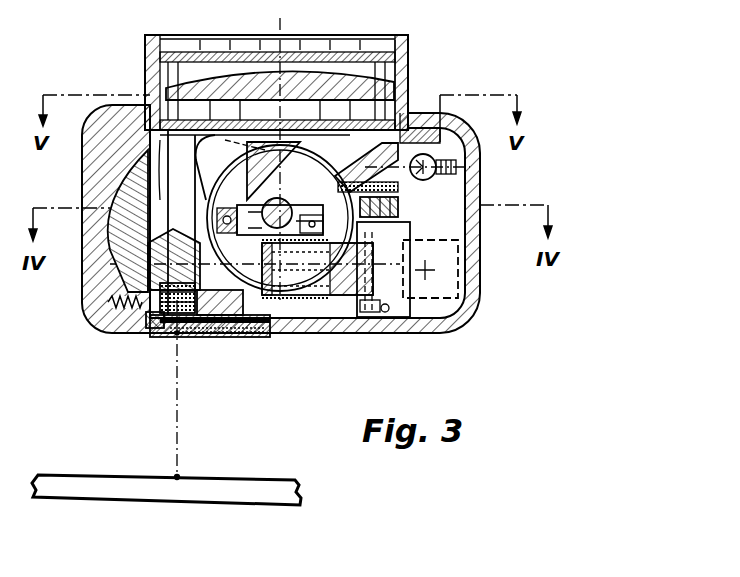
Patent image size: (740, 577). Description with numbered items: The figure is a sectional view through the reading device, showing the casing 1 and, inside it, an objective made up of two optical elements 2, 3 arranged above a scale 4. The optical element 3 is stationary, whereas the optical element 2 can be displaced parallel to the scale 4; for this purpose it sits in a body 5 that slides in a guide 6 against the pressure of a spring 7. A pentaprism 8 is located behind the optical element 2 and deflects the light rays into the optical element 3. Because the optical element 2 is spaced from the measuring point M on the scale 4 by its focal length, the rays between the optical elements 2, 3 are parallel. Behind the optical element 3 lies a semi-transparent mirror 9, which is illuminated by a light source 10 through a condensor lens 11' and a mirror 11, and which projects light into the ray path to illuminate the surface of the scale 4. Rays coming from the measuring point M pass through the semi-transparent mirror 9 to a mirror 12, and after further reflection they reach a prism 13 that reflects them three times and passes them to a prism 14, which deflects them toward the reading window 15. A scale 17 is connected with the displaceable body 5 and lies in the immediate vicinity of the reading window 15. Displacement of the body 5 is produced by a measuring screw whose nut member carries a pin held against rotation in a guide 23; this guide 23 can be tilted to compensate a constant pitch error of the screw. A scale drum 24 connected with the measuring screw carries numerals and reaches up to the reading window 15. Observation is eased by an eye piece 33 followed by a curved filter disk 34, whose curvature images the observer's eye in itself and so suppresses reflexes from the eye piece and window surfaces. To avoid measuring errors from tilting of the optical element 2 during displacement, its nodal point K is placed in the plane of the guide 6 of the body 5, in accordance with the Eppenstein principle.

The casing 1 is at (470, 306).
The optical element 2 is at (153, 322).
The optical element 3 is at (270, 316).
The scale 4 is at (197, 494).
The body 5 is at (226, 337).
The guide 6 is at (318, 308).
The spring 7 is at (100, 310).
The pentaprism 8 is at (165, 242).
The semi-transparent mirror 9 is at (358, 312).
The light source 10 is at (433, 180).
The mirror 11 is at (364, 167).
The condensor lens 11' is at (400, 202).
The mirror 12 is at (450, 322).
The prism 13 is at (110, 196).
The prism 14 is at (282, 162).
The reading window 15 is at (404, 78).
The scale 17 is at (208, 140).
The guide 23 is at (195, 234).
The scale drum 24 is at (214, 268).
The eye piece 33 is at (162, 82).
The curved filter disk 34 is at (190, 44).
The nodal point K is at (173, 335).
The measuring point M is at (177, 477).